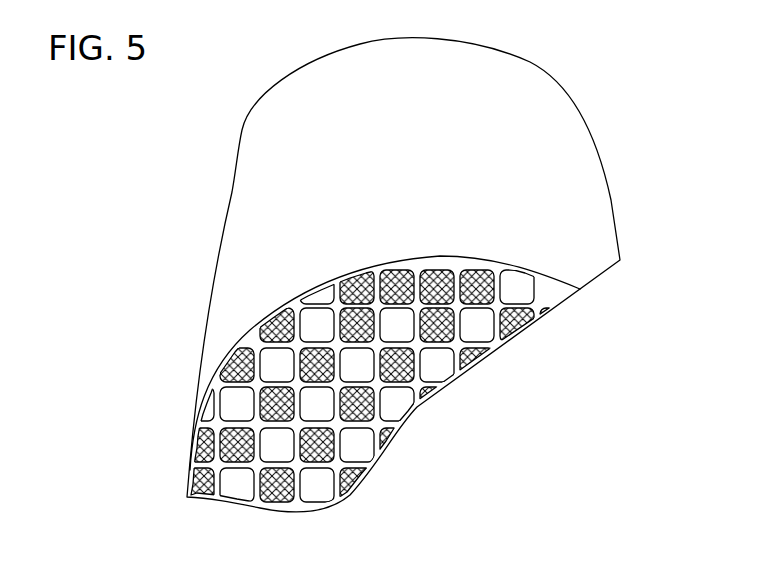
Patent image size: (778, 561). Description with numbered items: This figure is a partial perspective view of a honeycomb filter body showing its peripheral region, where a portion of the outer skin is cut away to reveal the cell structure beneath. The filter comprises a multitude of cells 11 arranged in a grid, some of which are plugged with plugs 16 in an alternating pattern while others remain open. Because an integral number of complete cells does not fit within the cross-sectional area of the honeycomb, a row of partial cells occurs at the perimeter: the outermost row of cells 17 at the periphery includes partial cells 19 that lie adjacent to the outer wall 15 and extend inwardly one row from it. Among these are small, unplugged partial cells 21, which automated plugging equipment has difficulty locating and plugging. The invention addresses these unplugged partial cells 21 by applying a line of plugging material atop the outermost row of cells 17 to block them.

The cells 11 is at (447, 363).
The outer wall 15 is at (527, 283).
The plugs 16 is at (363, 408).
The outermost row of cells 17 is at (195, 398).
The partial cells 19 is at (192, 448).
The unplugged partial cells 21 is at (325, 296).